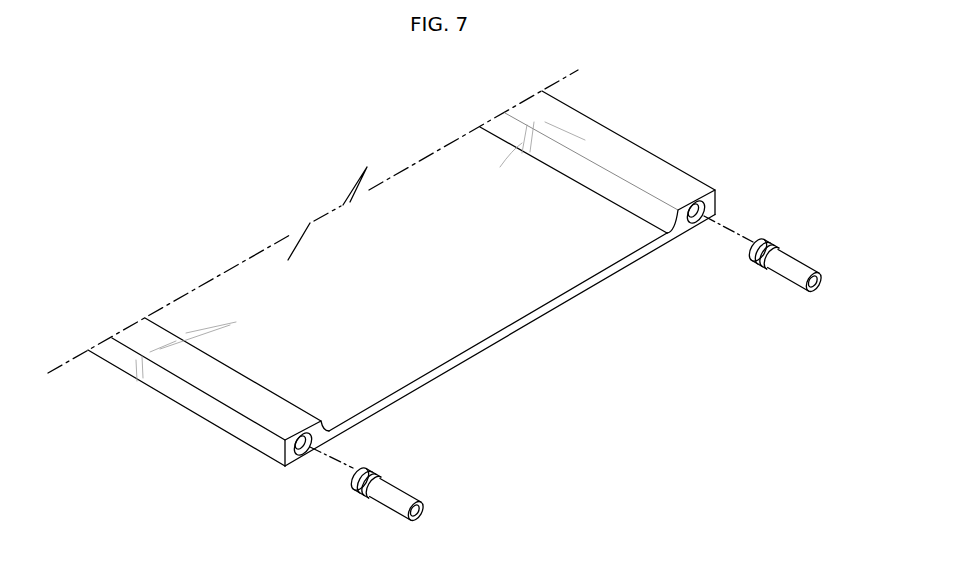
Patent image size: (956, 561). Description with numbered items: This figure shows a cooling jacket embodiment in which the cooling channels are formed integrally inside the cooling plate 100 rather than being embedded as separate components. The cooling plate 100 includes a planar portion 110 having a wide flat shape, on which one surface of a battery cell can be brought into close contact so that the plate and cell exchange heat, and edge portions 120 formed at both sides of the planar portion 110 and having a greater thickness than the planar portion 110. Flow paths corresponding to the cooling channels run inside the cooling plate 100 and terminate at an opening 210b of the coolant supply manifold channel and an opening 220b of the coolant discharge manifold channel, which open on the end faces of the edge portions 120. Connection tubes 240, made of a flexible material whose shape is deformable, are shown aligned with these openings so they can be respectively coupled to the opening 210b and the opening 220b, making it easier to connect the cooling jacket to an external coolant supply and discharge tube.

The cooling plate 100 is at (246, 228).
The planar portion 110 is at (483, 322).
The edge portion 120 is at (638, 160).
The opening of the coolant supply manifold channel 210b is at (305, 453).
The opening of the coolant discharge manifold channel 220b is at (697, 223).
The connection tube 240 is at (395, 497).